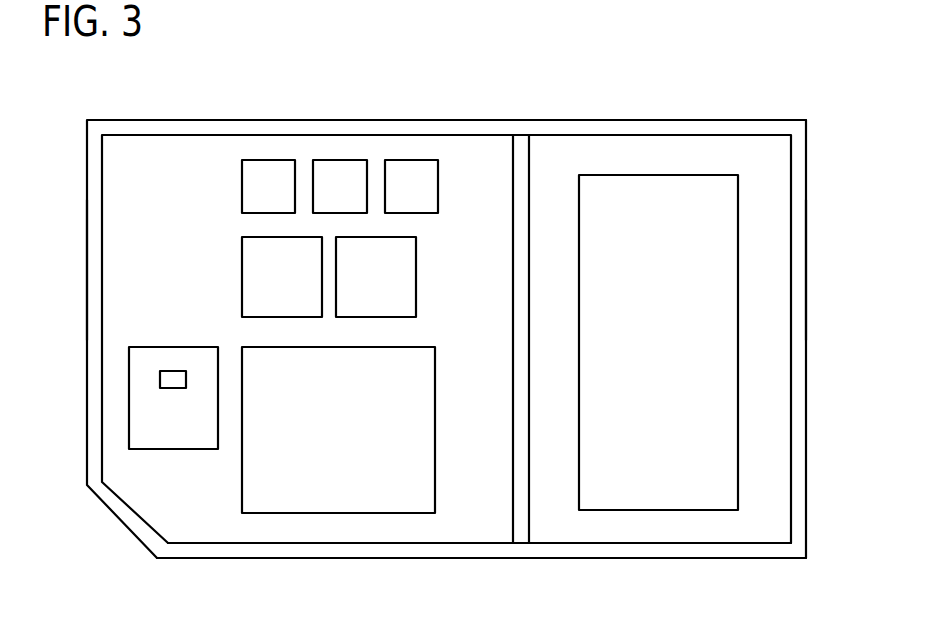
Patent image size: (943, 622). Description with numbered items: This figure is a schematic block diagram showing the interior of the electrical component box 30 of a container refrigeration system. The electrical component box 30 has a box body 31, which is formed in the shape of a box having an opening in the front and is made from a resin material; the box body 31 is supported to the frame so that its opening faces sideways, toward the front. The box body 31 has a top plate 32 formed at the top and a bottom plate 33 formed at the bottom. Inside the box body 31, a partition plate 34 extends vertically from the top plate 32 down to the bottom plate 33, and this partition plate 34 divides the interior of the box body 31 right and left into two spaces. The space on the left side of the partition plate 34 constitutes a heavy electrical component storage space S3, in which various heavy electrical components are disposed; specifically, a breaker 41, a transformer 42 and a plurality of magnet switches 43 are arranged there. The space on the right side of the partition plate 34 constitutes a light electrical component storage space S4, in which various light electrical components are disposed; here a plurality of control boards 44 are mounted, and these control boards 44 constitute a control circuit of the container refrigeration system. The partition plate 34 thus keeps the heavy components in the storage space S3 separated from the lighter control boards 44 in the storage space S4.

The electrical component box 30 is at (822, 104).
The box body 31 is at (700, 120).
The top plate 32 is at (478, 129).
The bottom plate 33 is at (474, 559).
The partition plate 34 is at (515, 178).
The breaker 41 is at (175, 437).
The transformer 42 is at (425, 454).
The magnet switch 43 is at (299, 253).
The control board 44 is at (717, 357).
The heavy electrical component storage space S3 is at (120, 267).
The light electrical component storage space S4 is at (763, 269).